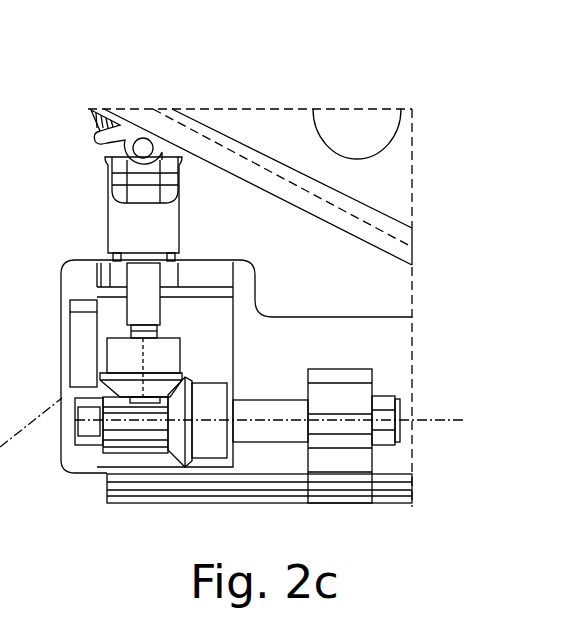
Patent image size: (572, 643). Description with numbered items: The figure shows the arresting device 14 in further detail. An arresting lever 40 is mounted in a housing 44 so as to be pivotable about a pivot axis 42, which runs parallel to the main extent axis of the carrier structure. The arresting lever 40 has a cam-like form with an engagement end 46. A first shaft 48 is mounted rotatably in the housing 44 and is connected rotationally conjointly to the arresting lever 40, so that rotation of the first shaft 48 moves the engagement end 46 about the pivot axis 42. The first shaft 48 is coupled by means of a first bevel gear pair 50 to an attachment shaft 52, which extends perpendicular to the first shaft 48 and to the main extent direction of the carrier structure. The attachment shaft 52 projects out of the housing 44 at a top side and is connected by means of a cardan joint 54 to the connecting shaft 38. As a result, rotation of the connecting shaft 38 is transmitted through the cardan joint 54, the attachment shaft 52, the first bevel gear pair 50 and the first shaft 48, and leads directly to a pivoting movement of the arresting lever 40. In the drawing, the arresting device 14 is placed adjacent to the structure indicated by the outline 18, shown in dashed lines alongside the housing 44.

The arresting device 14 is at (287, 296).
The frame beam 18 is at (276, 114).
The connecting shaft 38 is at (92, 118).
The arresting lever 40 is at (368, 391).
The pivot axis 42 is at (436, 423).
The housing 44 is at (200, 312).
The engagement end 46 is at (380, 466).
The first shaft 48 is at (266, 395).
The first bevel gear pair 50 is at (194, 375).
The attachment shaft 52 is at (123, 312).
The cardan joint 54 is at (130, 226).